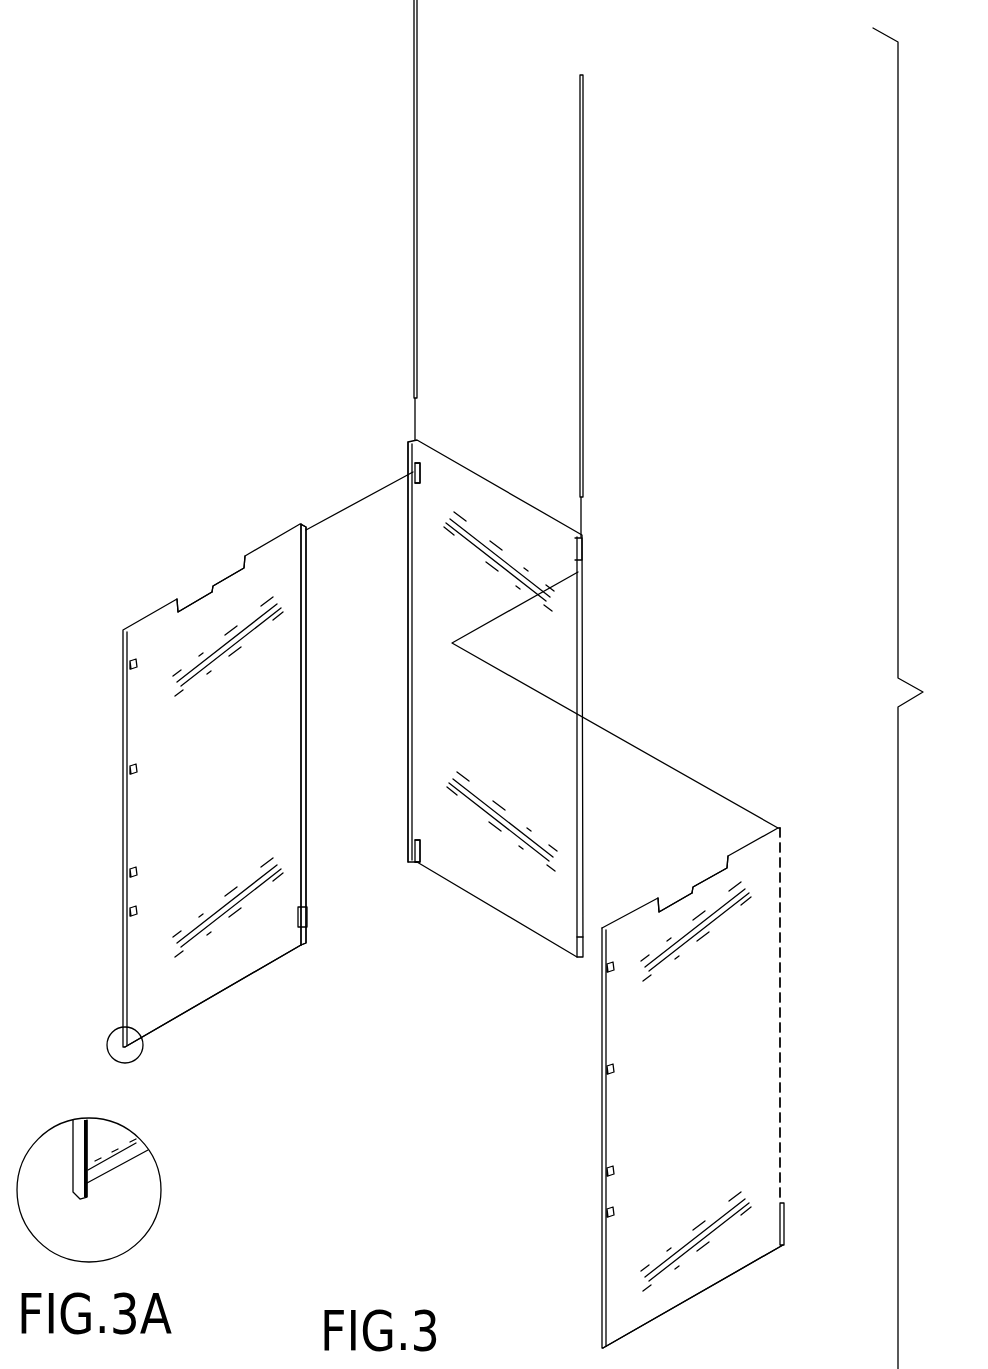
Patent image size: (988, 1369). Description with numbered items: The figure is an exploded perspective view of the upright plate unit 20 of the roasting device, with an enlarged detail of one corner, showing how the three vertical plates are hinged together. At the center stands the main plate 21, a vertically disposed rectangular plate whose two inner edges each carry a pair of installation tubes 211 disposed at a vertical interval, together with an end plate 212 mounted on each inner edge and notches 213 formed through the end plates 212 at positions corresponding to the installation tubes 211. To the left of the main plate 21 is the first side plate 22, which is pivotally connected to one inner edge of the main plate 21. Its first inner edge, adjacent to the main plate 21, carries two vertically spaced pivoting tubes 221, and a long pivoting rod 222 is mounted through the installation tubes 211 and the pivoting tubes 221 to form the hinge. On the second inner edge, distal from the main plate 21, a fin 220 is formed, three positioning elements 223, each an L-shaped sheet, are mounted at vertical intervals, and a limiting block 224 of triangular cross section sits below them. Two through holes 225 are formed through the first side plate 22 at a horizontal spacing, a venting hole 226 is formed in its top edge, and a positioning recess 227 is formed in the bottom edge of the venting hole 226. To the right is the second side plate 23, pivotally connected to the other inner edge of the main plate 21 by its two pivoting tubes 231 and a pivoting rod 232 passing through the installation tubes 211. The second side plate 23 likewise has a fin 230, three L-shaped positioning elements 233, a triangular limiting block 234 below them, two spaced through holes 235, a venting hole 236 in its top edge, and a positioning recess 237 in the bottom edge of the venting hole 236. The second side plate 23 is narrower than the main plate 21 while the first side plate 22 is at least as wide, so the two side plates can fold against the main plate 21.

In FIG. 3, the upright plate unit 20 is at (381, 1110).
In FIG. 3, the main plate 21 is at (486, 463).
In FIG. 3, the first side plate 22 is at (134, 538).
In FIG. 3, the second side plate 23 is at (799, 1050).
In FIG. 3, the installation tube 211 is at (407, 468).
In FIG. 3, the end plate 212 is at (407, 605).
In FIG. 3, the notch 213 is at (410, 855).
In FIG. 3, the fin 220 is at (124, 995).
In FIG. 3A, the fin 220 is at (88, 1168).
In FIG. 3, the pivoting tube 221 is at (305, 685).
In FIG. 3, the pivoting rod 222 is at (413, 190).
In FIG. 3, the positioning element 223 is at (130, 666).
In FIG. 3, the limiting block 224 is at (130, 912).
In FIG. 3, the through hole 225 is at (163, 873).
In FIG. 3, the venting hole 226 is at (212, 590).
In FIG. 3, the positioning recess 227 is at (178, 600).
In FIG. 3, the fin 230 is at (604, 1290).
In FIG. 3, the pivoting tube 231 is at (798, 927).
In FIG. 3, the pivoting rod 232 is at (584, 265).
In FIG. 3, the positioning element 233 is at (615, 985).
In FIG. 3, the limiting block 234 is at (605, 1214).
In FIG. 3, the through hole 235 is at (738, 1122).
In FIG. 3, the venting hole 236 is at (727, 876).
In FIG. 3, the positioning recess 237 is at (692, 893).